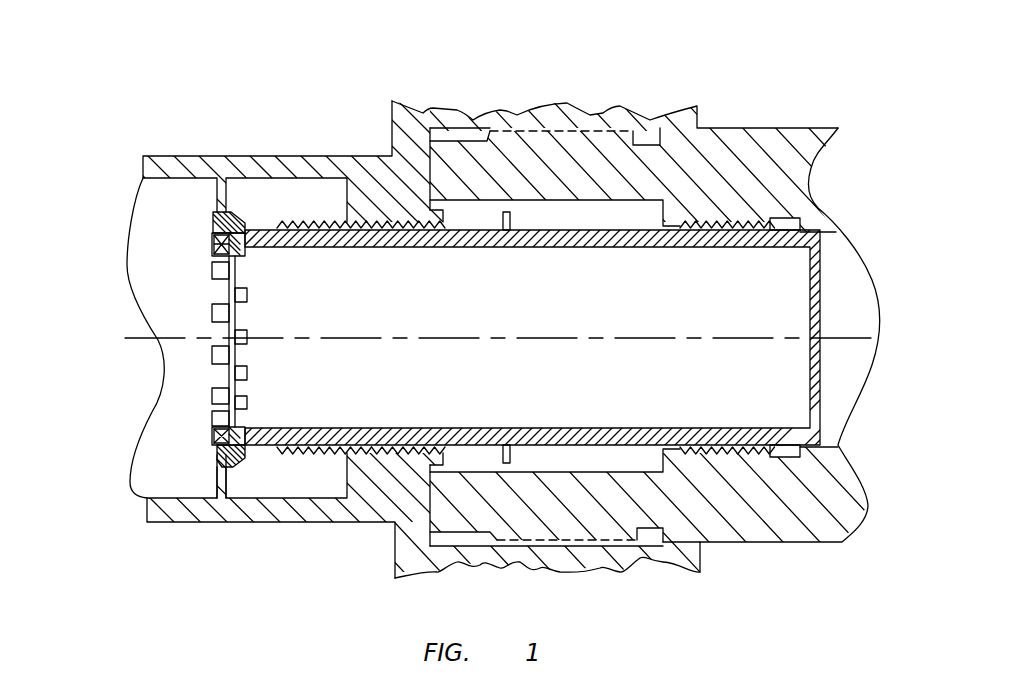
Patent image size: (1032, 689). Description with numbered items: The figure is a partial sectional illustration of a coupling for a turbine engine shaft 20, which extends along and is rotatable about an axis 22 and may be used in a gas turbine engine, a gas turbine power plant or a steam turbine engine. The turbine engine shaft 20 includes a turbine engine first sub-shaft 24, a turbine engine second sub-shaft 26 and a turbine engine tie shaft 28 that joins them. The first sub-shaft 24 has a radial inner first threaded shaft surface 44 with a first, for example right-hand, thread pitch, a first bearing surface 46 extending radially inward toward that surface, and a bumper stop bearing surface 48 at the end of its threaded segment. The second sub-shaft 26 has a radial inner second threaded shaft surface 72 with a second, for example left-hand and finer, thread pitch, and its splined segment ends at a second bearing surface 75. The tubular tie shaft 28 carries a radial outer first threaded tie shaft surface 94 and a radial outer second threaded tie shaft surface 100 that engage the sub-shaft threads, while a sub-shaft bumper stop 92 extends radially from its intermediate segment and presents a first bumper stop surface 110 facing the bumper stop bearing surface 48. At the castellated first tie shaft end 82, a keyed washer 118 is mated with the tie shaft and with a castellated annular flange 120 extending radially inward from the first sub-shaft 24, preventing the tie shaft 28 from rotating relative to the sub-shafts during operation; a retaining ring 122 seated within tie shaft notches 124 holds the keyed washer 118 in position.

The turbine engine shaft 20 is at (207, 80).
The axis 22 is at (130, 340).
The turbine engine first sub-shaft 24 is at (292, 156).
The turbine engine second sub-shaft 26 is at (752, 128).
The turbine engine tie shaft 28 is at (576, 246).
The first threaded shaft surface 44 is at (383, 445).
The first bearing surface 46 is at (440, 168).
The bumper stop bearing surface 48 is at (448, 224).
The second threaded shaft surface 72 is at (678, 446).
The second bearing surface 75 is at (418, 225).
The first tie shaft end 82 is at (212, 437).
The sub-shaft bumper stop 92 is at (522, 455).
The first threaded tie shaft surface 94 is at (313, 455).
The second threaded tie shaft surface 100 is at (733, 456).
The first bumper stop surface 110 is at (505, 233).
The keyed washer 118 is at (213, 224).
The annular flange 120 is at (216, 490).
The retaining ring 122 is at (212, 256).
The tie shaft notches 124 is at (214, 477).